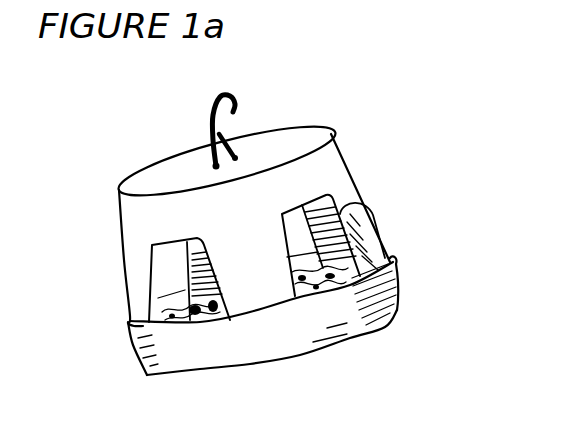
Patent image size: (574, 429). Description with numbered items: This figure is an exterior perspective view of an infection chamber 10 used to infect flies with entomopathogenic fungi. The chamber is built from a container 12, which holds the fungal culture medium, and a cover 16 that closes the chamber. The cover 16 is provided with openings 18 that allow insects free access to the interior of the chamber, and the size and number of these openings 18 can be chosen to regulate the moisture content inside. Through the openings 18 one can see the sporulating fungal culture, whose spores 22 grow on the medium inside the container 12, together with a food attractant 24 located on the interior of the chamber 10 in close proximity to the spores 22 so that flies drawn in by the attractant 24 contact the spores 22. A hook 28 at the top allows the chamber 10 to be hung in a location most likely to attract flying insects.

The infection chamber 10 is at (397, 165).
The container 12 is at (397, 280).
The cover 16 is at (317, 170).
The openings 18 is at (168, 278).
The spores 22 is at (343, 272).
The food attractant 24 is at (213, 327).
The hook 28 is at (228, 125).